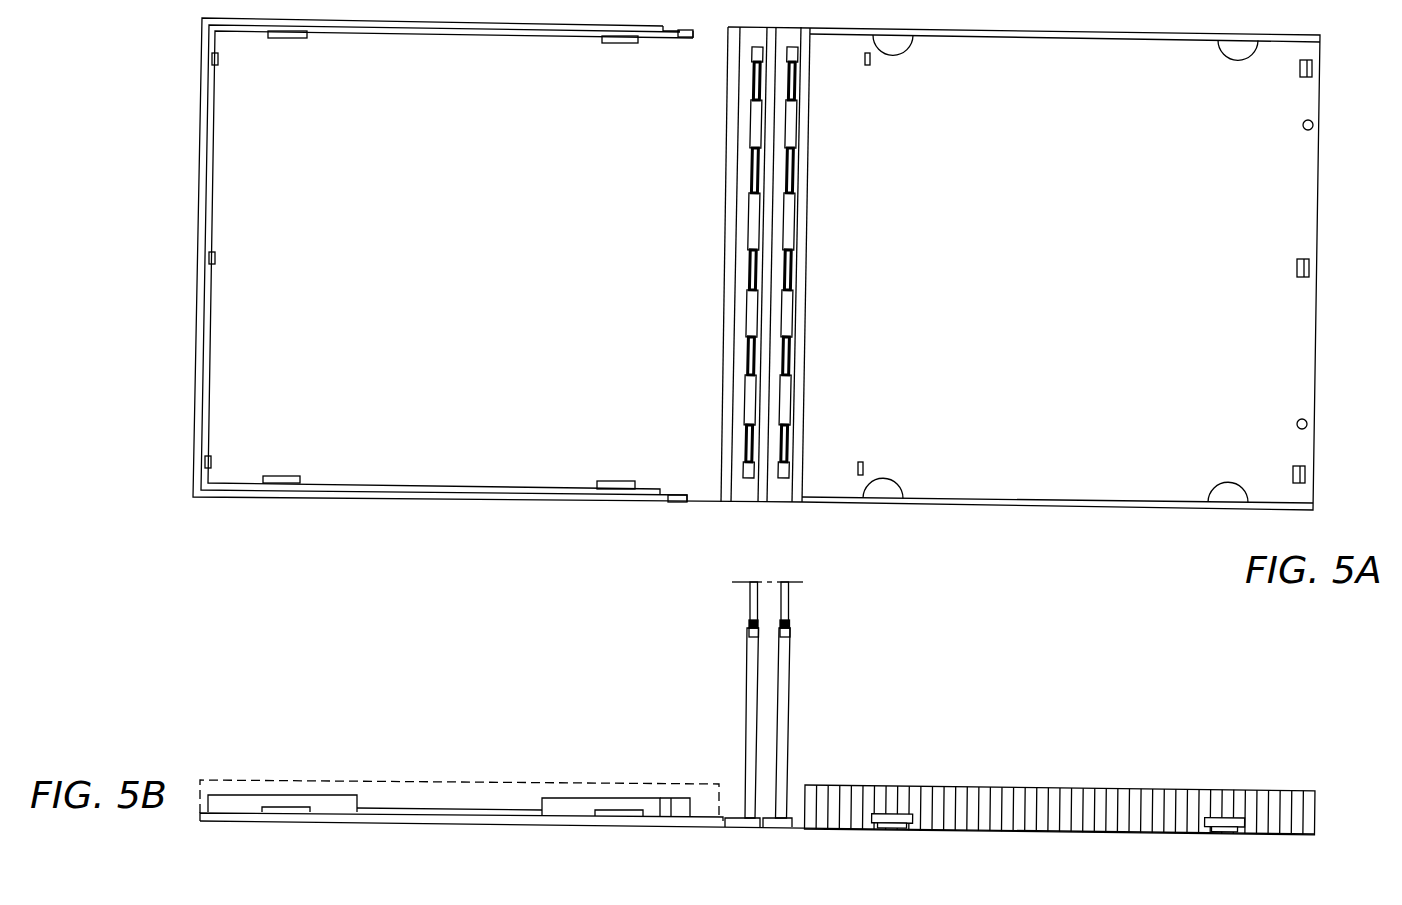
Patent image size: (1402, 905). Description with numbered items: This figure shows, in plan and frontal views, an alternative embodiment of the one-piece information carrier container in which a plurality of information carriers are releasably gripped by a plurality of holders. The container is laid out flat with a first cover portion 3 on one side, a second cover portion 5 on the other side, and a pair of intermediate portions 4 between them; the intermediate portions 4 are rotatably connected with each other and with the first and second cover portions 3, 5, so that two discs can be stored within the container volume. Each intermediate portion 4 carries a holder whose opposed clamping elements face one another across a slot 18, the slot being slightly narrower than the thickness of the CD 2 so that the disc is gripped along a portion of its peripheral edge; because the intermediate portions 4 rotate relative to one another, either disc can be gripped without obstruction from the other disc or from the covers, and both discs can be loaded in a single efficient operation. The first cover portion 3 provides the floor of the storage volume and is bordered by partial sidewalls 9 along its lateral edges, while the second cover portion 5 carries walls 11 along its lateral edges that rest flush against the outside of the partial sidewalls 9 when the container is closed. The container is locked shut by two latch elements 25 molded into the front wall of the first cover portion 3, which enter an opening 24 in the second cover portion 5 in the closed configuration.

In FIG. 5B, the CD 2 is at (750, 610).
In FIG. 5A, the first cover portion 3 is at (240, 142).
In FIG. 5A, the intermediate portion 4 is at (792, 128).
In FIG. 5B, the intermediate portion 4 is at (750, 703).
In FIG. 5A, the second cover portion 5 is at (1295, 172).
In FIG. 5B, the partial sidewalls 9 is at (323, 805).
In FIG. 5B, the walls 11 is at (987, 807).
In FIG. 5A, the slot 18 is at (778, 231).
In FIG. 5A, the opening 24 is at (1316, 64).
In FIG. 5A, the latch elements 25 is at (212, 55).